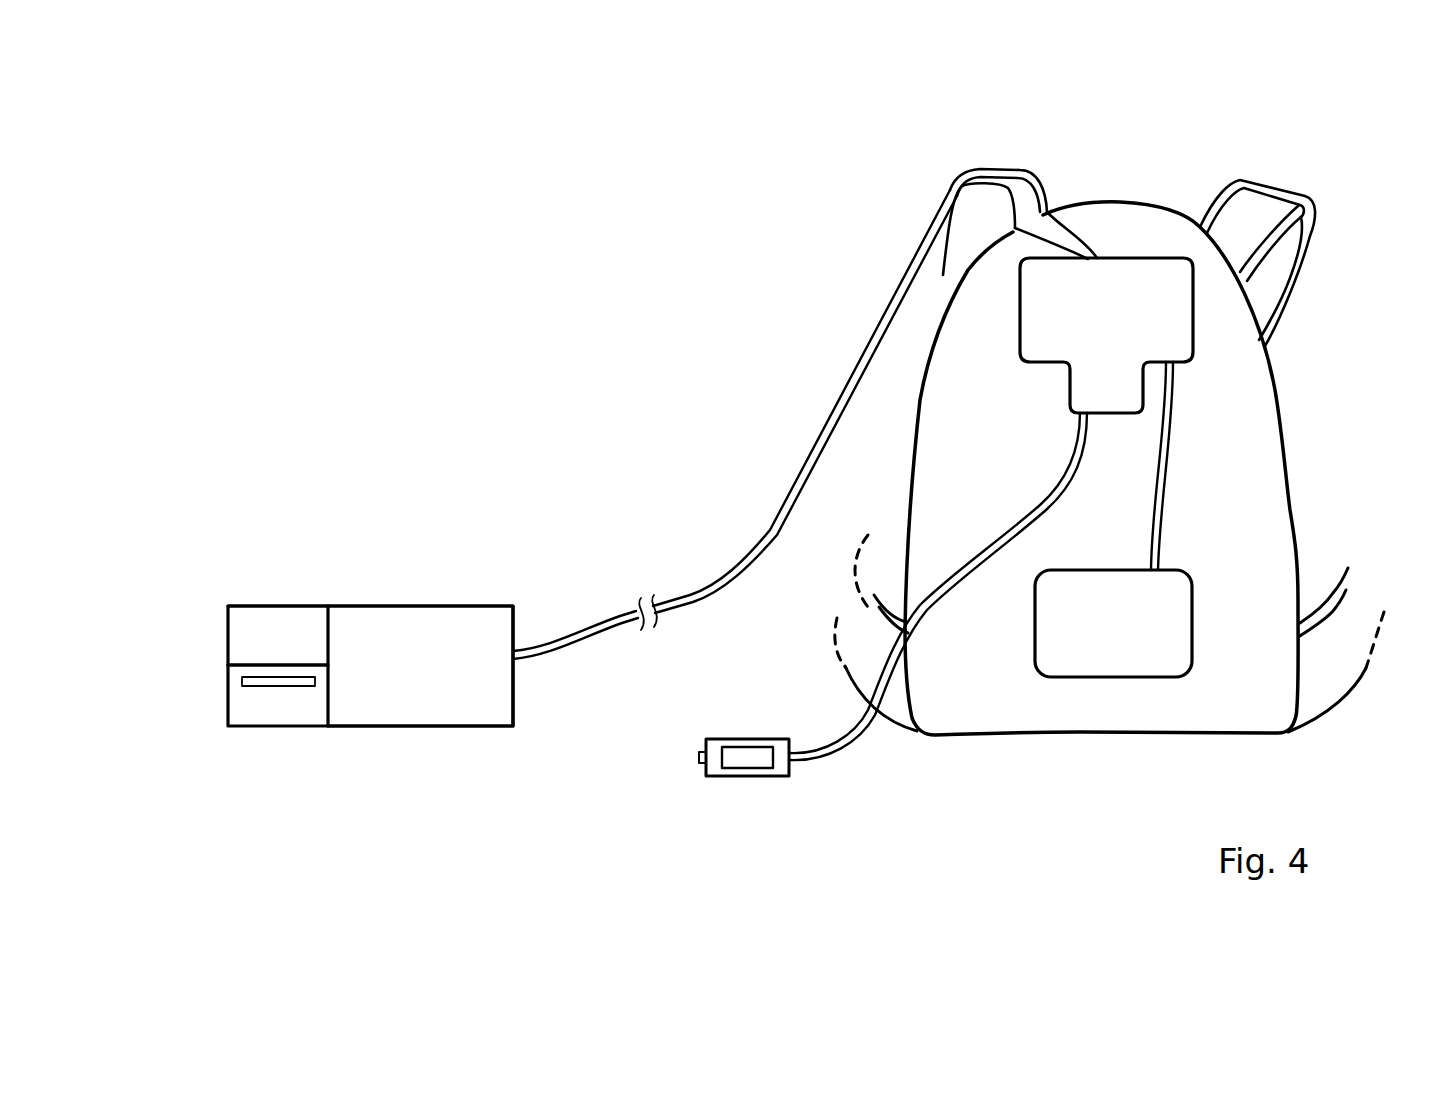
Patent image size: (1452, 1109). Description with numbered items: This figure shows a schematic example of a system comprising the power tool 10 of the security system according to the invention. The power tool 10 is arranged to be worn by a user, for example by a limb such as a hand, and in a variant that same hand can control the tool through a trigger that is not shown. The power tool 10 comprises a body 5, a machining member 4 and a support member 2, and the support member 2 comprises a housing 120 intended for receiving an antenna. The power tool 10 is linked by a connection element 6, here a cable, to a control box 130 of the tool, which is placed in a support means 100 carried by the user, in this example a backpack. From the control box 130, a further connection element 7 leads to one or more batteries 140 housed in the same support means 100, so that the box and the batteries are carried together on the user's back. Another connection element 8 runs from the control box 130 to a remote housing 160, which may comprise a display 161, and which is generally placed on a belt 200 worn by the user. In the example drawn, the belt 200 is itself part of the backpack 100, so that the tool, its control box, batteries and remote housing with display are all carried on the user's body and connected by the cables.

The support member 2 is at (277, 715).
The machining member 4 is at (277, 620).
The body 5 is at (426, 680).
The connection element 6 is at (818, 459).
The connection element 7 is at (1175, 470).
The connection element 8 is at (1035, 488).
The power tool 10 is at (315, 646).
The support means 100 is at (1285, 392).
The housing 120 is at (252, 680).
The control box 130 is at (1106, 335).
The batteries 140 is at (1113, 623).
The remote housing 160 is at (720, 740).
The display 161 is at (744, 757).
The belt 200 is at (868, 650).